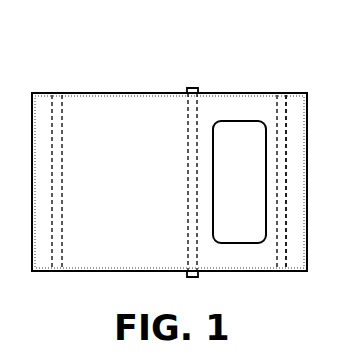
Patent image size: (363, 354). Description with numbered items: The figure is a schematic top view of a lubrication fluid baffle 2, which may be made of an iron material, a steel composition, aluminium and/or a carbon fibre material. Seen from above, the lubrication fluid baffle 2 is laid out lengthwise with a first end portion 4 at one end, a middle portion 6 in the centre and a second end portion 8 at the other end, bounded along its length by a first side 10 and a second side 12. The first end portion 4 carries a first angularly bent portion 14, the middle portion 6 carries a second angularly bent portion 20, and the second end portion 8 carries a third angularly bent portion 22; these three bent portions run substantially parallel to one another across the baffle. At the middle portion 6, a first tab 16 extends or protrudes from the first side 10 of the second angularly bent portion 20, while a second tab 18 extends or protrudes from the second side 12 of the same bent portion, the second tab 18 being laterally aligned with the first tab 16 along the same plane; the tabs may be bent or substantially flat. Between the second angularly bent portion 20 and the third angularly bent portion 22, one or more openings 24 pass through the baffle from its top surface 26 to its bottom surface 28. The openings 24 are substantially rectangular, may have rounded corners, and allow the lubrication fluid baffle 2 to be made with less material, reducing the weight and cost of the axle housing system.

The lubrication fluid baffle 2 is at (258, 72).
The first end portion 4 is at (76, 272).
The middle portion 6 is at (178, 272).
The second end portion 8 is at (270, 272).
The first side 10 is at (236, 272).
The second side 12 is at (229, 92).
The first angularly bent portion 14 is at (58, 127).
The first tab 16 is at (192, 278).
The second tab 18 is at (193, 87).
The second angularly bent portion 20 is at (194, 140).
The third angularly bent portion 22 is at (283, 109).
The openings 24 is at (236, 176).
The top surface 26 is at (295, 211).
The bottom surface 28 is at (290, 172).